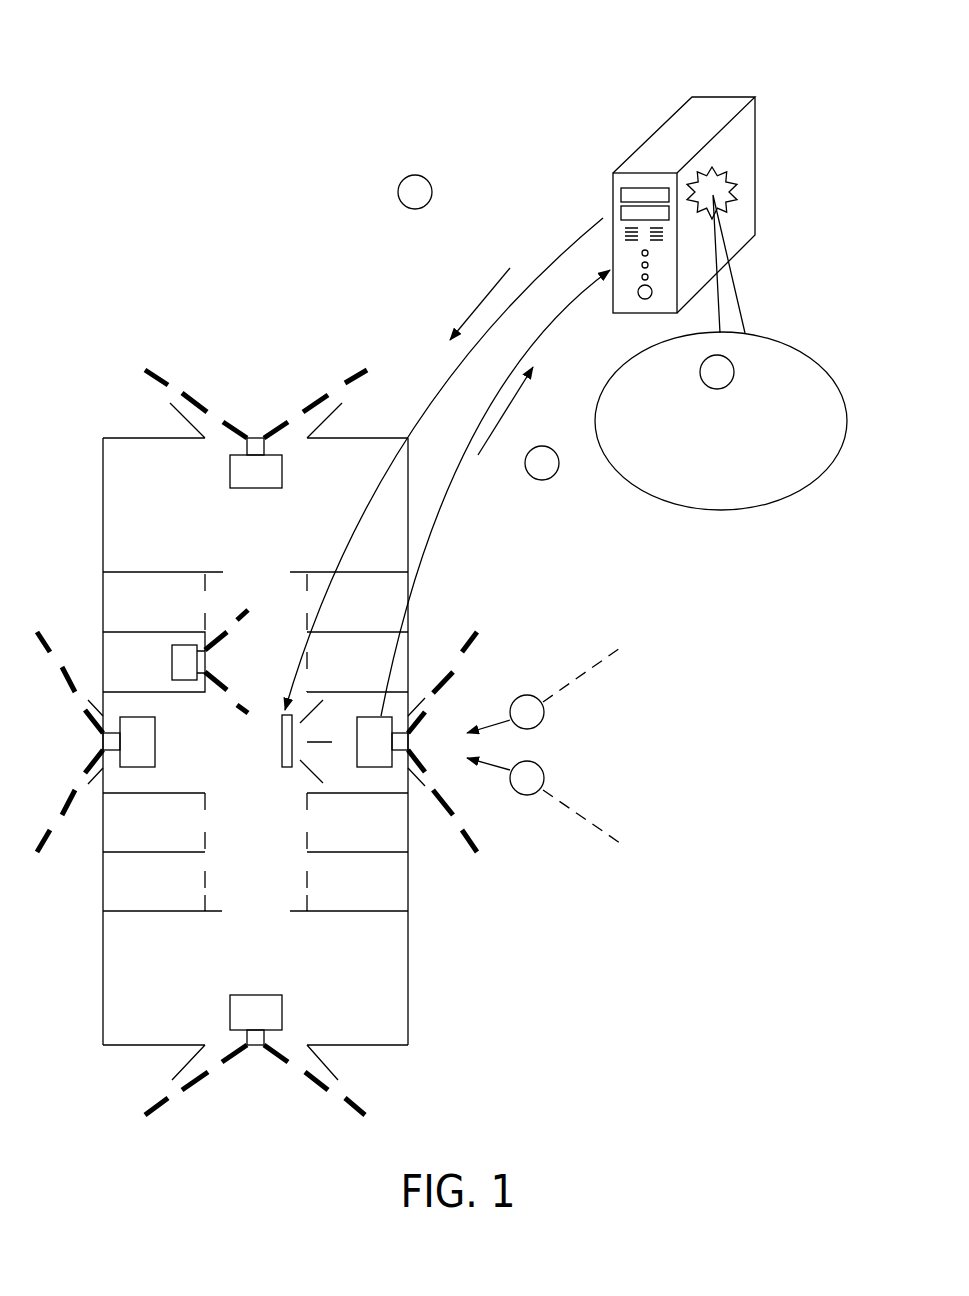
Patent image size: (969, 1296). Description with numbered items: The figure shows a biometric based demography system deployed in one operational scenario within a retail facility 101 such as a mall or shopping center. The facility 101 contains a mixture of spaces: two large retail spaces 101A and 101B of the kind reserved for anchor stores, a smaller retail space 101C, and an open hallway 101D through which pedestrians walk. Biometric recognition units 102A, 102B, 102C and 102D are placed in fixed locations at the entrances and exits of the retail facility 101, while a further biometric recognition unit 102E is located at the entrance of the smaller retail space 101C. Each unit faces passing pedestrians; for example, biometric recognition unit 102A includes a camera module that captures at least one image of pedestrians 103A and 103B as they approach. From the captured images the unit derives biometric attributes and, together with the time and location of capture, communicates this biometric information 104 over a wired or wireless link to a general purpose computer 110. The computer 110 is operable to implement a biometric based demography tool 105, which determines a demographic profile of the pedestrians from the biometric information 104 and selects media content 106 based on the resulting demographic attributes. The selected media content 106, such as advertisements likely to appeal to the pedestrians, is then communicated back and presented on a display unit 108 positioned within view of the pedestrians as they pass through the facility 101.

The retail facility 101 is at (104, 437).
The retail space 101A is at (233, 517).
The retail space 101B is at (235, 956).
The retail space 101C is at (160, 663).
The hallway 101D is at (235, 863).
The biometric recognition unit 102A is at (366, 719).
The biometric recognition unit 102B is at (233, 1021).
The biometric recognition unit 102C is at (146, 719).
The biometric recognition unit 102D is at (233, 481).
The biometric recognition unit 102E is at (186, 679).
The pedestrian 103A is at (527, 795).
The pedestrian 103B is at (527, 695).
The biometric information 104 is at (508, 407).
The biometric based demography tool 105 is at (728, 171).
The media content 106 is at (477, 307).
The display unit 108 is at (282, 742).
The general purpose computer 110 is at (680, 107).